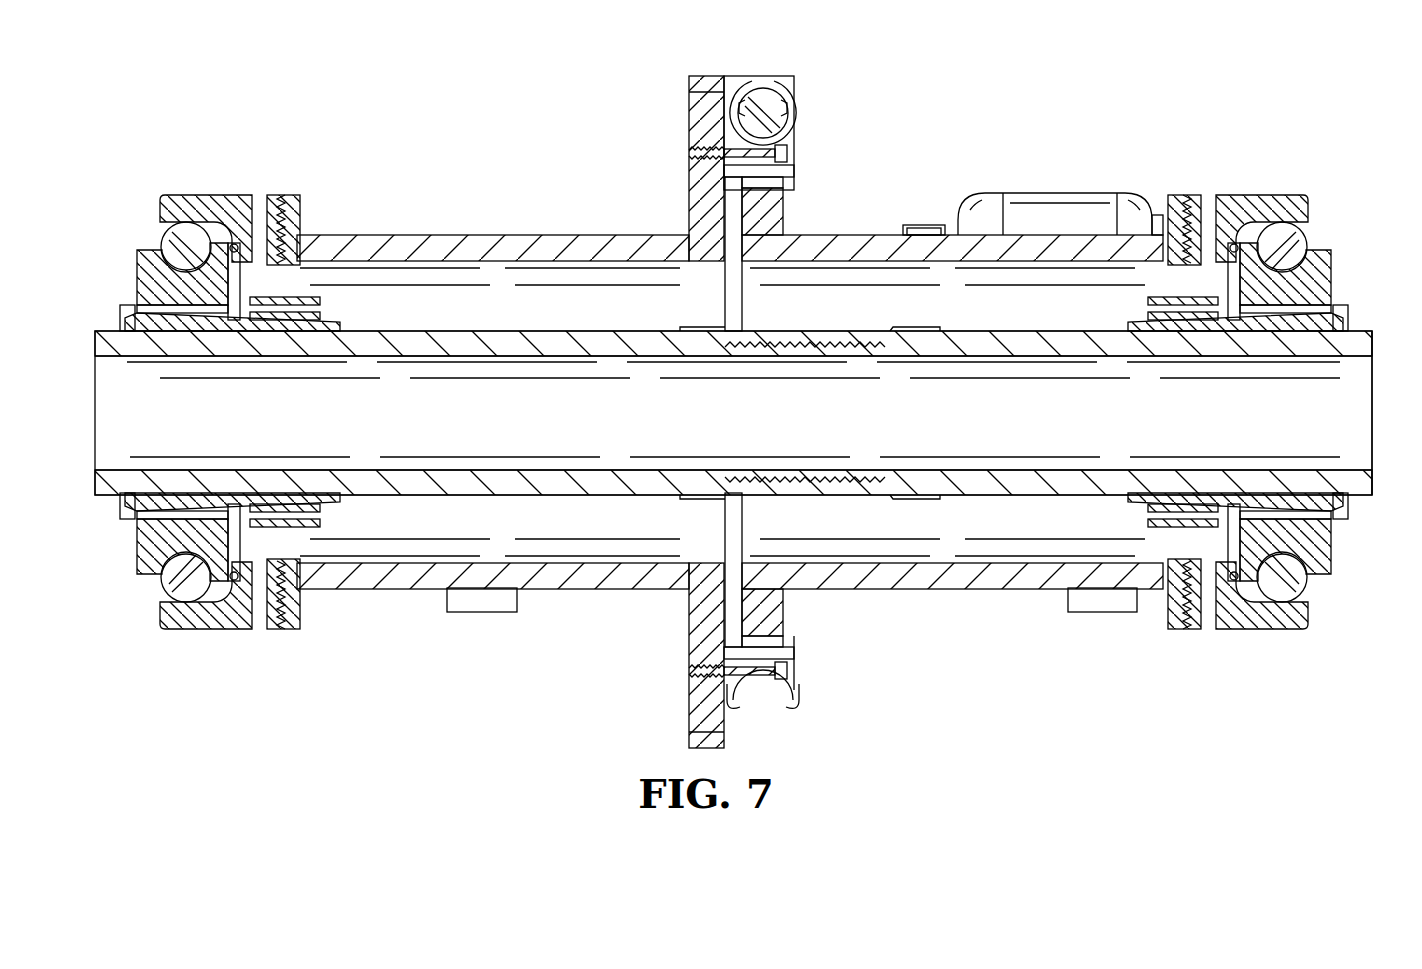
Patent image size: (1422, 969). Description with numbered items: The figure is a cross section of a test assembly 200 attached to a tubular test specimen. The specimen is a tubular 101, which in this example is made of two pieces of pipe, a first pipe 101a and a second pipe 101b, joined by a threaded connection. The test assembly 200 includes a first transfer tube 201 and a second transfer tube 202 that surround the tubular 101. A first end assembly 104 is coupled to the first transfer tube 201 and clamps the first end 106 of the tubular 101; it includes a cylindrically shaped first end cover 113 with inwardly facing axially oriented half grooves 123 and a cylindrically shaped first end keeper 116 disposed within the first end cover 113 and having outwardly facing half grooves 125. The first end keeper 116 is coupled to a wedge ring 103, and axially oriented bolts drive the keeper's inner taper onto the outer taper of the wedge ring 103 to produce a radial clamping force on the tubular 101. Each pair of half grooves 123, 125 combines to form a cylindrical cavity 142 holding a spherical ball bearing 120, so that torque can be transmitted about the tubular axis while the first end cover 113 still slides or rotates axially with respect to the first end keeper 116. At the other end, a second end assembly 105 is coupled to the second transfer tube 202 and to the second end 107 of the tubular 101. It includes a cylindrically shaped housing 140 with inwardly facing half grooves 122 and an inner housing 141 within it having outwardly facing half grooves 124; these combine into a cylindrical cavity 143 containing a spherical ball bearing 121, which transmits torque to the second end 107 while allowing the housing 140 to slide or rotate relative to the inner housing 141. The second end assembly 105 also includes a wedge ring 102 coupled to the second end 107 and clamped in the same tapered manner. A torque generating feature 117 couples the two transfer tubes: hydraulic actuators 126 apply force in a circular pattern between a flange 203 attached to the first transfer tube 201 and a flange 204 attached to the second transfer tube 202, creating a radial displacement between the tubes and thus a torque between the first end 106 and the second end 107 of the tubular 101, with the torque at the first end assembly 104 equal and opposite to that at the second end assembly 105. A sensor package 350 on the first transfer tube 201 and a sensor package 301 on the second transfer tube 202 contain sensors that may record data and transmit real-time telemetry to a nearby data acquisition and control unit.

The test assembly 200 is at (733, 383).
The tubular 101 is at (1366, 322).
The first pipe 101a is at (908, 328).
The second pipe 101b is at (712, 328).
The second end 107 is at (1378, 440).
The wedge ring 102 is at (1262, 322).
The wedge ring 103 is at (255, 320).
The first end assembly 104 is at (205, 193).
The second end assembly 105 is at (1280, 193).
The first end 106 is at (93, 378).
The first end cover 113 is at (190, 630).
The first end keeper 116 is at (143, 556).
The torque generating feature 117 is at (762, 86).
The spherical ball bearing 120 is at (166, 582).
The spherical ball bearing 121 is at (1280, 630).
The half grooves 122 is at (1278, 598).
The half grooves 123 is at (268, 600).
The half grooves 124 is at (1222, 559).
The half grooves 125 is at (226, 572).
The actuators 126 is at (800, 118).
The housing 140 is at (1200, 193).
The inner housing 141 is at (1297, 515).
The cylindrical cavity 142 is at (236, 582).
The cylindrical cavity 143 is at (1190, 632).
The first transfer tube 201 is at (420, 590).
The second transfer tube 202 is at (978, 590).
The flange 203 is at (697, 712).
The flange 204 is at (778, 600).
The sensor package 301 is at (1130, 613).
The sensor package 350 is at (480, 613).